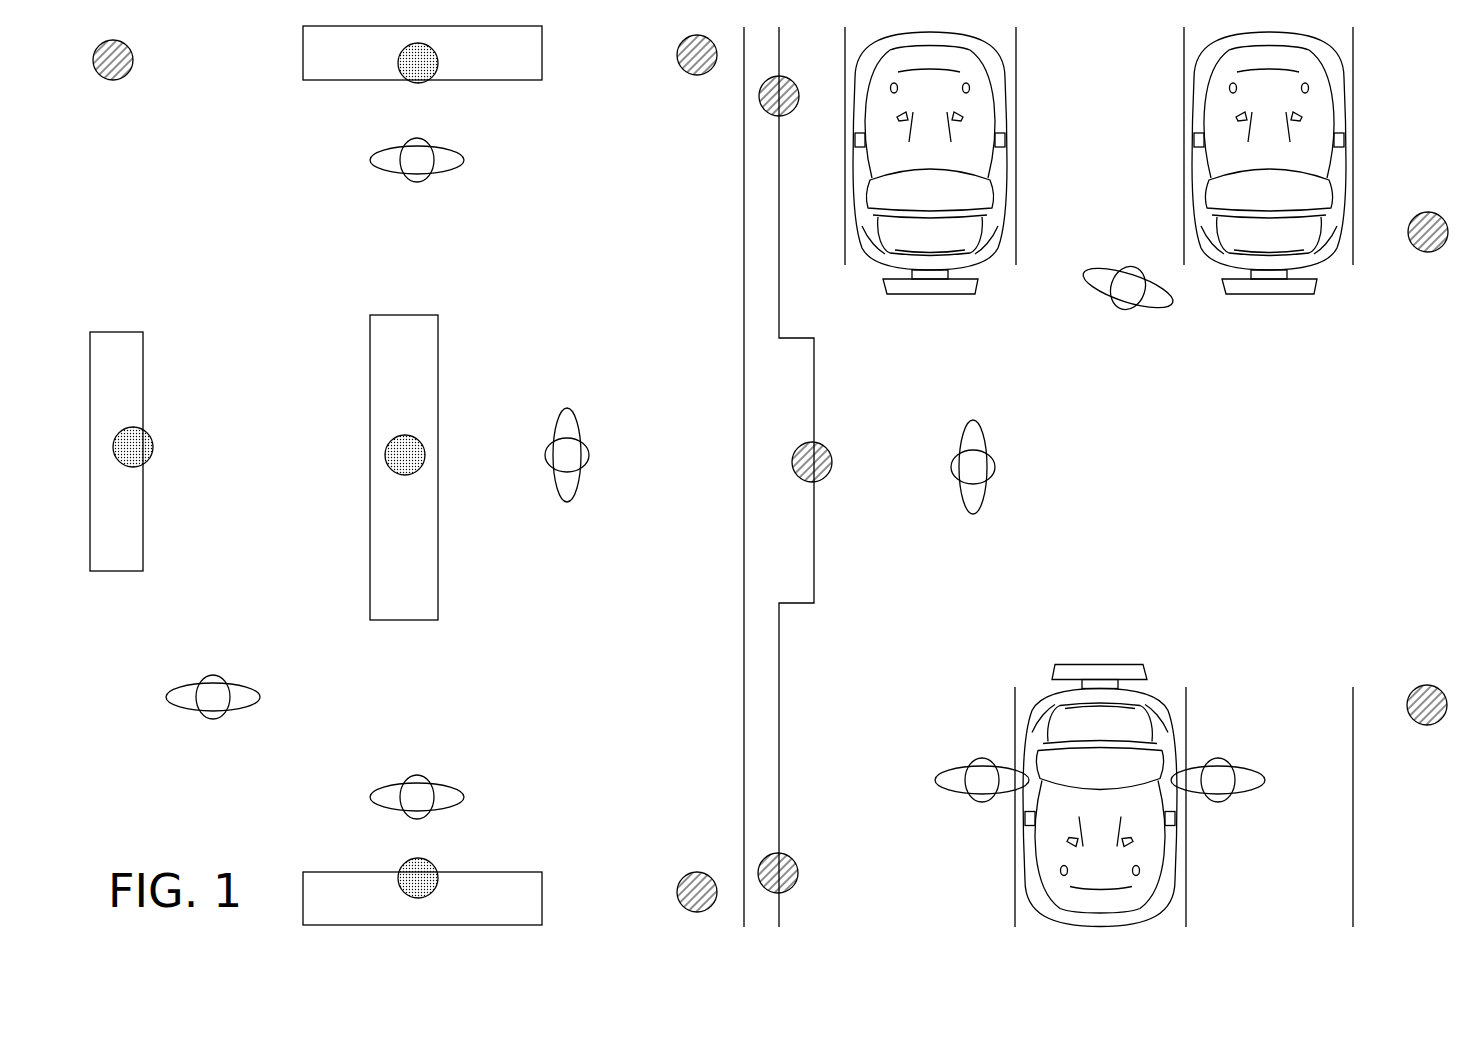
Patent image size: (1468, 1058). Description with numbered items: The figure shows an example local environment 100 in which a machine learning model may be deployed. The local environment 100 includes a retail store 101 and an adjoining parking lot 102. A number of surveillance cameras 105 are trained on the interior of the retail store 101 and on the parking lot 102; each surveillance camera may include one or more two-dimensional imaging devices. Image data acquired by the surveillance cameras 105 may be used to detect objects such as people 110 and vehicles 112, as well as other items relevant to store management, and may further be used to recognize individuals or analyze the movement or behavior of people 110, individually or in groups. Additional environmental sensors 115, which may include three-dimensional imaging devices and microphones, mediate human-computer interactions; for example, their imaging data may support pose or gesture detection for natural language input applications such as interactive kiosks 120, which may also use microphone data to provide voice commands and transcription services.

The local environment 100 is at (1385, 358).
The retail store 101 is at (707, 663).
The parking lot 102 is at (1452, 564).
The surveillance camera 105 is at (118, 78).
The person 110 is at (415, 178).
The vehicle 112 is at (949, 196).
The environmental sensor 115 is at (413, 85).
The interactive kiosk 120 is at (526, 68).